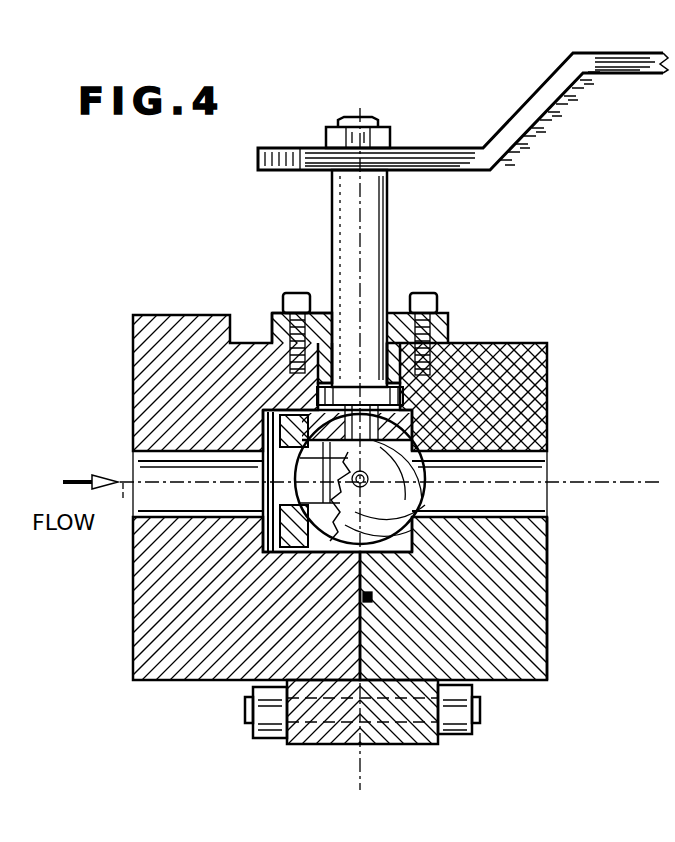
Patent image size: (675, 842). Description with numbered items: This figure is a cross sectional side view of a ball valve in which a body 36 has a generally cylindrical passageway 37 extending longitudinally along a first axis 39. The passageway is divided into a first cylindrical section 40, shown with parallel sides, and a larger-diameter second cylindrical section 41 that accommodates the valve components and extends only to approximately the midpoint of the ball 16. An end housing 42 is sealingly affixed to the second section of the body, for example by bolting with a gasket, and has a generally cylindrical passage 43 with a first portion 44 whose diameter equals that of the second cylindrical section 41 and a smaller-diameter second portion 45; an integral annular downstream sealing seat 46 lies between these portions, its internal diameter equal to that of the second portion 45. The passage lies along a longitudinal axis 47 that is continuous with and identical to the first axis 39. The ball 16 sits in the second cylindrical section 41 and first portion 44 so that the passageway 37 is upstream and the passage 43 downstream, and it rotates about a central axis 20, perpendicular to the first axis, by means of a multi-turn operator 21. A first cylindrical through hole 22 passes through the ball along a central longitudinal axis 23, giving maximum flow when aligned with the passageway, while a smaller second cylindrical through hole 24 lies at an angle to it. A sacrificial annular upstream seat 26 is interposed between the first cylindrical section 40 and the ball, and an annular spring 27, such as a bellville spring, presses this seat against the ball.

The ball 16 is at (513, 680).
The central axis 20 is at (362, 765).
The multi-turn operator 21 is at (388, 253).
The first cylindrical through hole 22 is at (325, 560).
The central longitudinal axis 23 is at (557, 355).
The second cylindrical through hole 24 is at (505, 388).
The sacrificial annular upstream seat 26 is at (315, 550).
The annular spring 27 is at (280, 545).
The body 36 is at (135, 665).
The passageway 37 is at (192, 512).
The first axis 39 is at (248, 450).
The first cylindrical section 40 is at (133, 455).
The second cylindrical section 41 is at (335, 548).
The end housing 42 is at (548, 563).
The passage 43 is at (530, 505).
The first portion 44 is at (492, 398).
The second portion 45 is at (540, 462).
The integral annular downstream sealing seat 46 is at (483, 555).
The longitudinal axis 47 is at (555, 465).